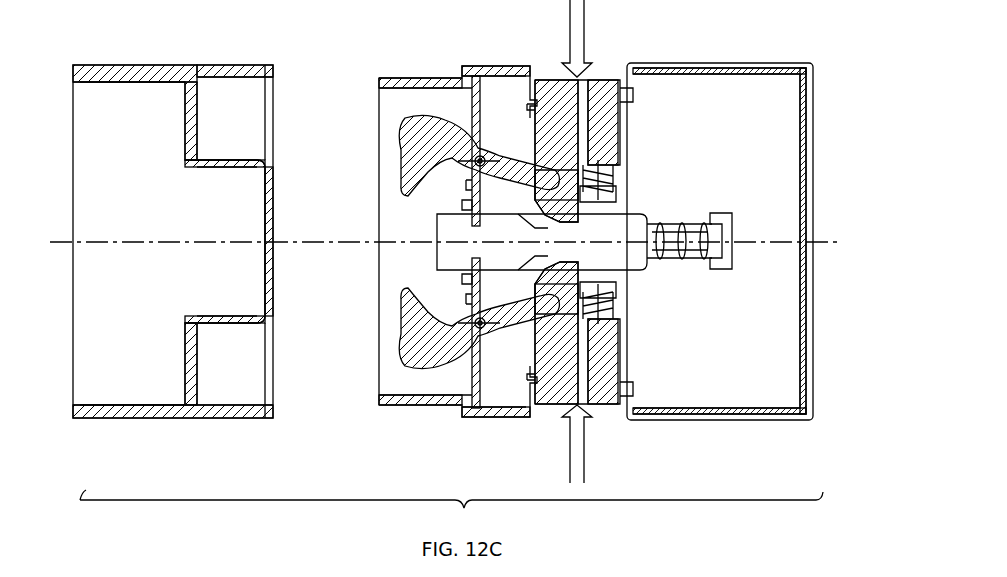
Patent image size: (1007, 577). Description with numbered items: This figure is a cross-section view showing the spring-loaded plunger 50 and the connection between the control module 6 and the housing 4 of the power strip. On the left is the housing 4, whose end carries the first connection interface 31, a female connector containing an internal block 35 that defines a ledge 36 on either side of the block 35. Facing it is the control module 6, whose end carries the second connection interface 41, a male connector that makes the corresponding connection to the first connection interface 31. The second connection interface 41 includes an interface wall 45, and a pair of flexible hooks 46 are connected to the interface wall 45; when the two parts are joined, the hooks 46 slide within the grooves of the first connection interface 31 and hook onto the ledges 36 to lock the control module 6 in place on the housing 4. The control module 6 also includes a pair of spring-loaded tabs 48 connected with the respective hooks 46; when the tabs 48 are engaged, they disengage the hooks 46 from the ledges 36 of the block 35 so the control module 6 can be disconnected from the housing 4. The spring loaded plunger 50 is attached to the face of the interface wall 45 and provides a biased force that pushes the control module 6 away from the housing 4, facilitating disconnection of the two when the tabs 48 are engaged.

The housing 4 is at (112, 65).
The control module 6 is at (752, 63).
The first connection interface 31 is at (252, 342).
The internal block 35 is at (209, 220).
The ledge 36 is at (228, 167).
The second connection interface 41 is at (358, 115).
The interface wall 45 is at (483, 140).
The flexible hooks 46 is at (404, 150).
The spring-loaded tabs 48 is at (553, 106).
The spring loaded plunger 50 is at (634, 220).